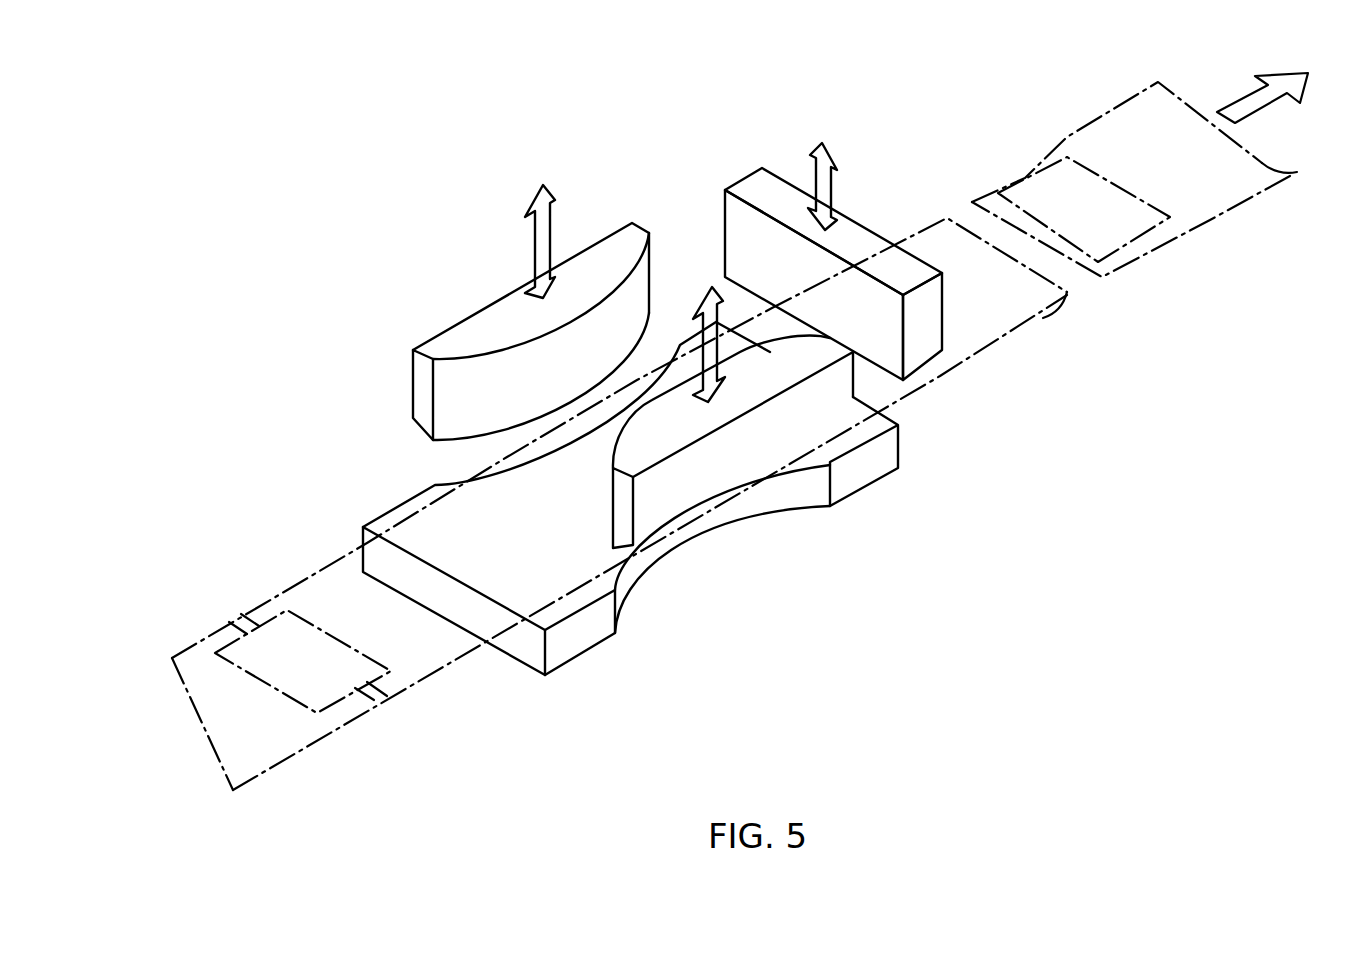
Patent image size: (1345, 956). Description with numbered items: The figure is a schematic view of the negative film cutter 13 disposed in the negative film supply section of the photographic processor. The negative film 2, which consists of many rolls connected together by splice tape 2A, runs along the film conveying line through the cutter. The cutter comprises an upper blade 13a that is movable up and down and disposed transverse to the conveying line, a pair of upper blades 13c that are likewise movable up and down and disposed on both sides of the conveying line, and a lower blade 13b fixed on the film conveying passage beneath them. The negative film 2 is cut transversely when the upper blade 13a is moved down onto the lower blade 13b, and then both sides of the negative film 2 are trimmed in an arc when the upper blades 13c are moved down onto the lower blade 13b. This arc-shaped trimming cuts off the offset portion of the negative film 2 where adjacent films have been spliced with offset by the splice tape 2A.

The negative film 2 is at (1090, 121).
The splice tape 2A is at (337, 687).
The negative film cutter 13 is at (705, 192).
The upper blade 13a is at (928, 318).
The lower blade 13b is at (893, 453).
The upper blades 13c is at (467, 333).